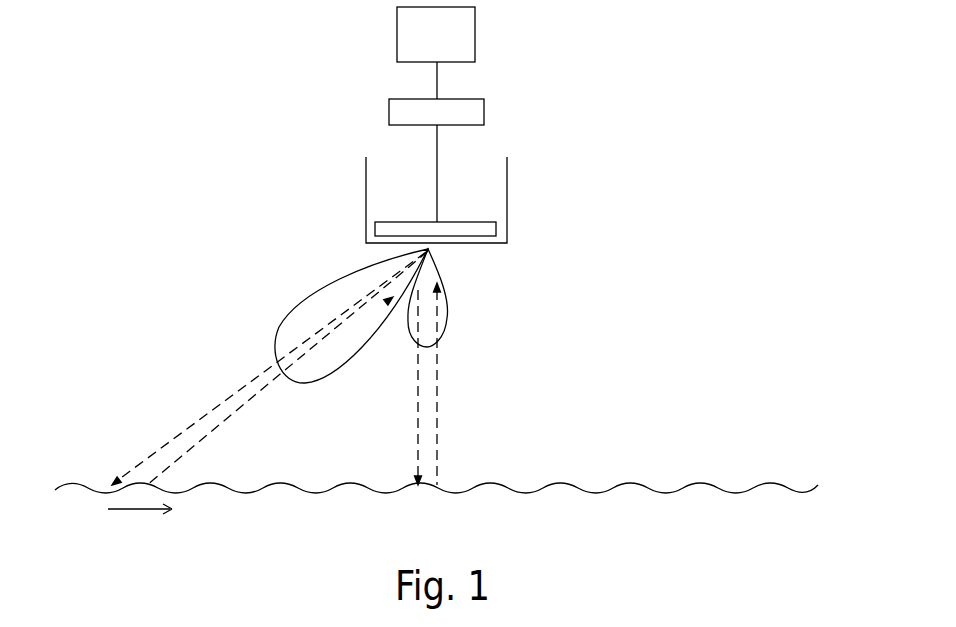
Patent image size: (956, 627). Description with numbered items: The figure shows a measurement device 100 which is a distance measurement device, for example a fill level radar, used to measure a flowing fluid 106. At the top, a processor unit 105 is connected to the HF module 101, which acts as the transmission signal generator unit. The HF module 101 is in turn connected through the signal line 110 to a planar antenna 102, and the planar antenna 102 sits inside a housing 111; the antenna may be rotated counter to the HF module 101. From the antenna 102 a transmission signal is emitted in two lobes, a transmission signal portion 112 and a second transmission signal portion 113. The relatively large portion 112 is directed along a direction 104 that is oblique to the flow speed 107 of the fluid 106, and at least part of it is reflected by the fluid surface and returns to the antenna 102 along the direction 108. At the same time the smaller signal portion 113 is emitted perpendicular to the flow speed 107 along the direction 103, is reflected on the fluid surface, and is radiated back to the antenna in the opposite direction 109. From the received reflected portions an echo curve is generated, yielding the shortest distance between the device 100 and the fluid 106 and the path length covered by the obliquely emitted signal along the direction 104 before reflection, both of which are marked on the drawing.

The measurement device 100 is at (603, 71).
The HF module 101 is at (405, 107).
The planar antenna 102 is at (475, 228).
The perpendicular emission direction 103 is at (418, 480).
The oblique emission direction 104 is at (195, 422).
The processor unit 105 is at (475, 33).
The fluid 106 is at (700, 493).
The flow speed 107 is at (118, 511).
The return direction of oblique signal 108 is at (222, 425).
The return direction of perpendicular signal 109 is at (438, 400).
The signal line 110 is at (432, 163).
The housing 111 is at (366, 200).
The transmission signal portion 112 is at (370, 345).
The second transmission signal portion 113 is at (447, 317).